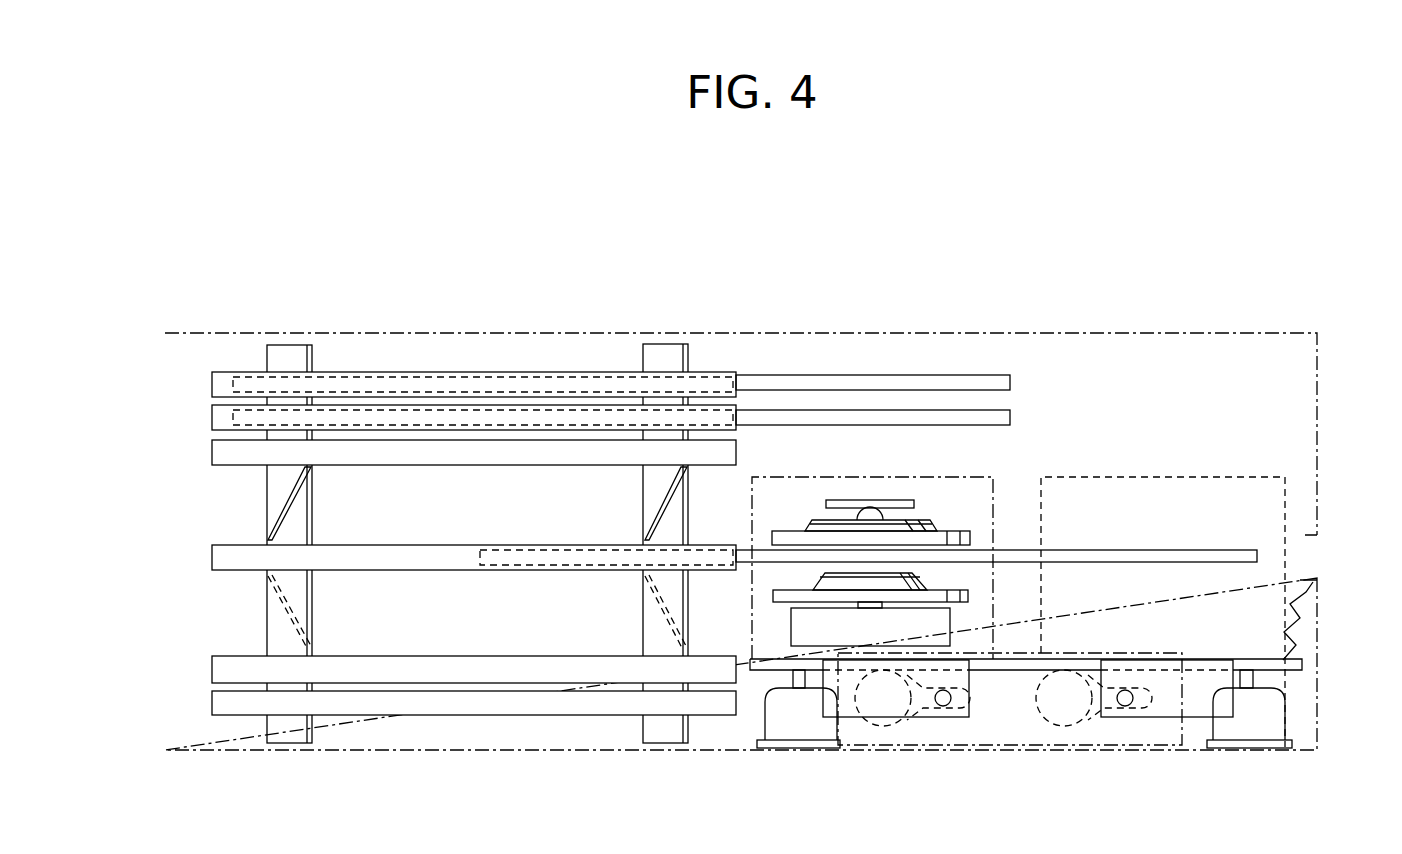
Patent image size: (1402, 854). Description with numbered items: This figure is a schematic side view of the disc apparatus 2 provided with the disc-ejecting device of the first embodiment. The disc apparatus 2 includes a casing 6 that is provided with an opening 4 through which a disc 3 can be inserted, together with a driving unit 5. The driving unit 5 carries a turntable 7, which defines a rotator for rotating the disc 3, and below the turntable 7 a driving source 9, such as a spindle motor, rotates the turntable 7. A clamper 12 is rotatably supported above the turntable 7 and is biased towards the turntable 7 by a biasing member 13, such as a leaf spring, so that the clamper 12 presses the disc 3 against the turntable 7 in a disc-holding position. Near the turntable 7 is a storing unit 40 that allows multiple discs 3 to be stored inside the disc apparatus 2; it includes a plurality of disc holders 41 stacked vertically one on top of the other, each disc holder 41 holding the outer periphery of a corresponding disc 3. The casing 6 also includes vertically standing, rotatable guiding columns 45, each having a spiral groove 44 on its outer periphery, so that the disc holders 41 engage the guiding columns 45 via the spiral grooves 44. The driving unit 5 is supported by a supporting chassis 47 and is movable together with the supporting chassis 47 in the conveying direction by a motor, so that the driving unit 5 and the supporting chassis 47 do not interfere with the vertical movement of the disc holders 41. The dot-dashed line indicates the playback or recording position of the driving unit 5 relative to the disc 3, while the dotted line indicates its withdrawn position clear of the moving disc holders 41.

The disc apparatus 2 is at (778, 286).
The disc 3 is at (1203, 555).
The opening 4 is at (1316, 556).
The driving unit 5 is at (968, 477).
The casing 6 is at (1192, 332).
The turntable 7 is at (968, 596).
The driving source 9 is at (950, 626).
The clamper 12 is at (787, 530).
The biasing member 13 is at (887, 500).
The storing unit 40 is at (476, 344).
The disc holder 41 is at (212, 383).
The spiral groove 44 is at (298, 500).
The guiding column 45 is at (312, 607).
The supporting chassis 47 is at (763, 690).